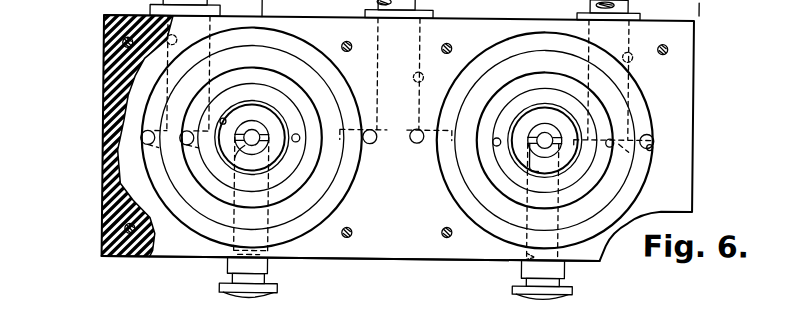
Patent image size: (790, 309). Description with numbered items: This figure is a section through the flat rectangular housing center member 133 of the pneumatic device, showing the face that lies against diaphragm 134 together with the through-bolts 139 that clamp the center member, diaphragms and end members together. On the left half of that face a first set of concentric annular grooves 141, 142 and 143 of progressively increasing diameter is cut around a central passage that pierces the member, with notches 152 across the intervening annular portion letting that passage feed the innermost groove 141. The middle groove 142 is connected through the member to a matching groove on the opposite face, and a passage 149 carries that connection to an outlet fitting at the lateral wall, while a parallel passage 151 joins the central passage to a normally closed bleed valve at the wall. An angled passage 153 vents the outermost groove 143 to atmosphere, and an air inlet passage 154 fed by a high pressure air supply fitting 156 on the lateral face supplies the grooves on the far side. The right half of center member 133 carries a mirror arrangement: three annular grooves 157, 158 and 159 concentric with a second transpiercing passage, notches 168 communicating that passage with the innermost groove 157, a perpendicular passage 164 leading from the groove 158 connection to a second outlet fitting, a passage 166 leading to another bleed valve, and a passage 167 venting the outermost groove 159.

The housing center member 133 is at (694, 55).
The diaphragm 134 is at (107, 78).
The through-bolts 139 is at (105, 44).
The annular groove 141 is at (226, 120).
The annular groove 142 is at (303, 177).
The annular groove 143 is at (210, 245).
The passage 149 is at (168, 46).
The passage 151 is at (266, 252).
The notches 152 is at (270, 128).
The angled passage 153 is at (142, 138).
The air inlet passage 154 is at (432, 66).
The high pressure air supply fitting 156 is at (421, 7).
The annular groove 157 is at (517, 120).
The annular groove 158 is at (555, 76).
The annular groove 159 is at (464, 214).
The perpendicular passage 164 is at (634, 58).
The passage 166 is at (528, 256).
The passage 167 is at (652, 140).
The notches 168 is at (526, 185).